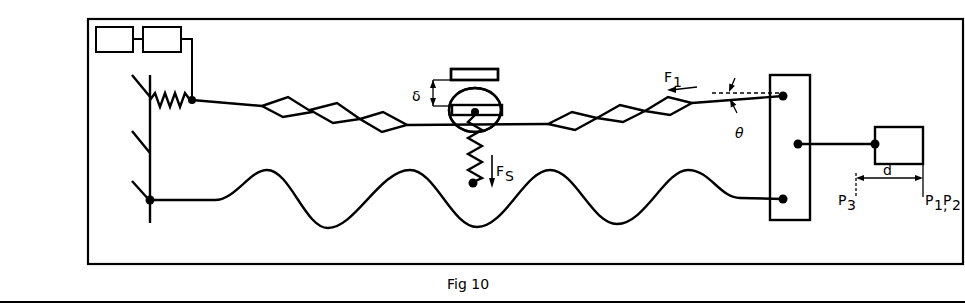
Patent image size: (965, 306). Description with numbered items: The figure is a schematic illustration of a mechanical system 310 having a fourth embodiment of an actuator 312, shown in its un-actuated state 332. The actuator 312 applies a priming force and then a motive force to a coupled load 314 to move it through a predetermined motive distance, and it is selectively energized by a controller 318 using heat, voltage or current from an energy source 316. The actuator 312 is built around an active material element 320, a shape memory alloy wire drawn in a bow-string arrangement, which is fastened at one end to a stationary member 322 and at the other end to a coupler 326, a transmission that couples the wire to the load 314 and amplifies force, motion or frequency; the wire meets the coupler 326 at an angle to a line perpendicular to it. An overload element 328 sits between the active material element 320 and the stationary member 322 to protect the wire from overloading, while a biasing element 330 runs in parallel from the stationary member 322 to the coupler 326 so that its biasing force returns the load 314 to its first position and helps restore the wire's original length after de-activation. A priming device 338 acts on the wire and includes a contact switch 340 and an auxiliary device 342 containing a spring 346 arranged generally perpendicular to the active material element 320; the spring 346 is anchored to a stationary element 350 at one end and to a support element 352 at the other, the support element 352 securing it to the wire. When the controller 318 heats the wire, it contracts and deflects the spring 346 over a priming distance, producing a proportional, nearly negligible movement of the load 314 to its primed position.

The mechanical system 310 is at (88, 73).
The actuator 312 is at (264, 78).
The load 314 is at (860, 145).
The energy source 316 is at (119, 39).
The controller 318 is at (167, 63).
The active material element 320 is at (385, 110).
The stationary member 322 is at (152, 206).
The coupler 326 is at (775, 75).
The overload element 328 is at (194, 105).
The biasing element 330 is at (370, 200).
The un-actuated state 332 is at (70, 150).
The priming device 338 is at (519, 80).
The contact switch 340 is at (473, 69).
The auxiliary device 342 is at (438, 62).
The spring 346 is at (465, 172).
The stationary element 350 is at (473, 187).
The support element 352 is at (505, 110).